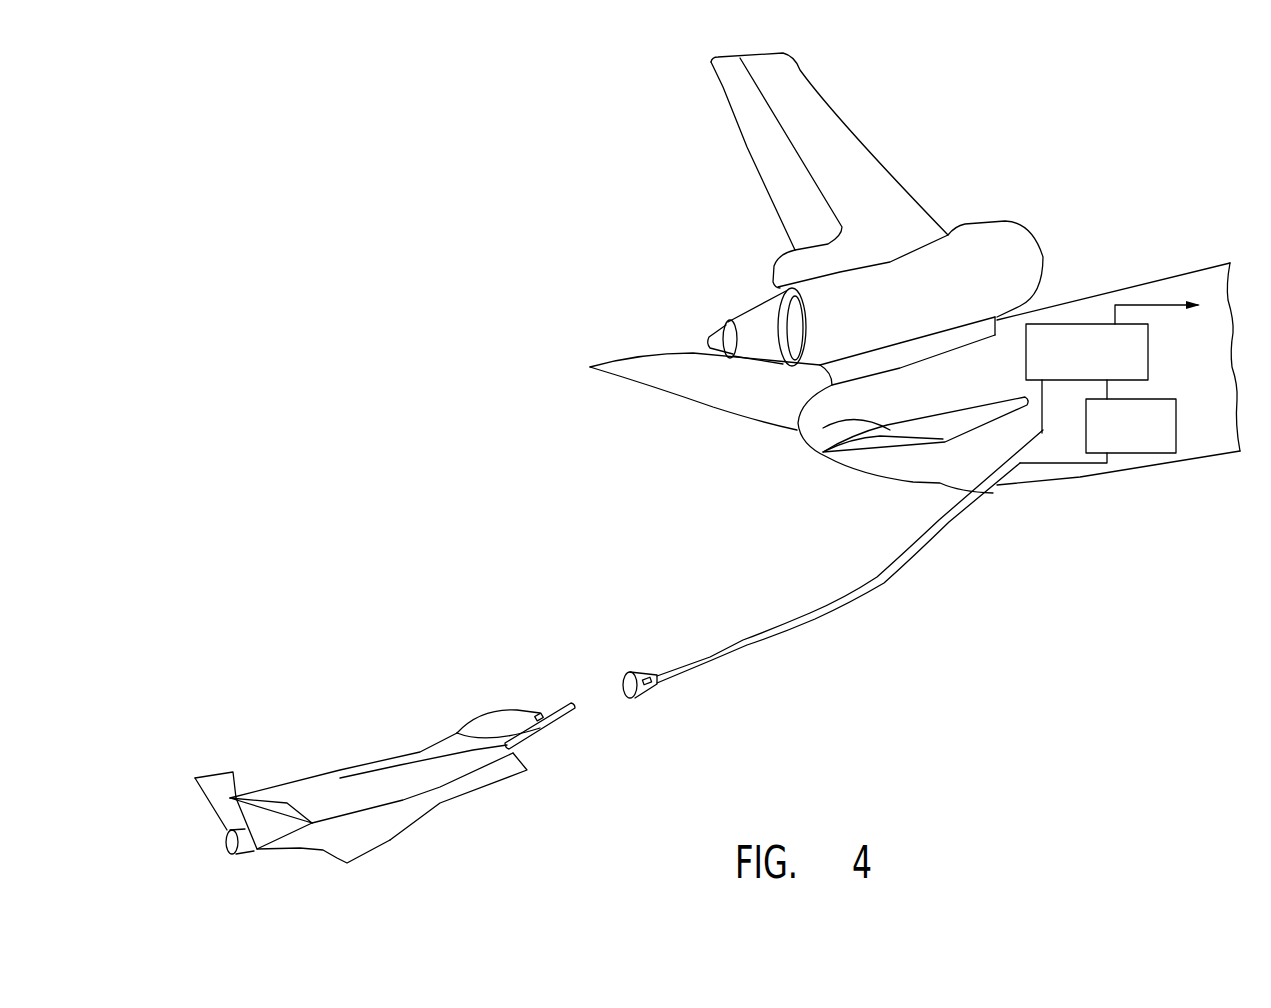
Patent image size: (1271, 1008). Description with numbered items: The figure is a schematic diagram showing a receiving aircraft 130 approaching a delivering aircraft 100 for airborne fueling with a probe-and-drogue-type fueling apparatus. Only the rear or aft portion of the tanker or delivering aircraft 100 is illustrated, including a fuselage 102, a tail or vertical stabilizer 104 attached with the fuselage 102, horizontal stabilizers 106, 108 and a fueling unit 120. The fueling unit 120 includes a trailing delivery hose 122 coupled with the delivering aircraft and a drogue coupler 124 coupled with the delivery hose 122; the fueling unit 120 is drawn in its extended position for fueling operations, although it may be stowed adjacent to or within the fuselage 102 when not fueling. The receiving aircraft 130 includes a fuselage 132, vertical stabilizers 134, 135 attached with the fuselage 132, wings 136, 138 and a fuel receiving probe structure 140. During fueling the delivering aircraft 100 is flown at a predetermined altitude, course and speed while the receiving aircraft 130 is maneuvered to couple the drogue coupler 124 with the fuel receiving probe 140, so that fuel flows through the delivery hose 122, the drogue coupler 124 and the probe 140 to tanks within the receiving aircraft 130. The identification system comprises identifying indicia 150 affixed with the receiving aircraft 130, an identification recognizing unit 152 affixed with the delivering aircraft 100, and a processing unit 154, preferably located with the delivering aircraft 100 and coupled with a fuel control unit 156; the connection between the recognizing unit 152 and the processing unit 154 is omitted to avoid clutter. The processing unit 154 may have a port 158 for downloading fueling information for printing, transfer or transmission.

The delivering aircraft 100 is at (1022, 592).
The fuselage 102 is at (1047, 482).
The vertical stabilizer 104 is at (820, 92).
The horizontal stabilizer 106 is at (677, 397).
The horizontal stabilizer 108 is at (810, 445).
The fueling unit 120 is at (793, 646).
The delivery hose 122 is at (820, 607).
The drogue coupler 124 is at (637, 668).
The receiving aircraft 130 is at (520, 830).
The fuselage 132 is at (517, 782).
The vertical stabilizer 134 is at (233, 770).
The vertical stabilizer 135 is at (263, 797).
The wing 136 is at (340, 770).
The wing 138 is at (387, 843).
The fuel receiving probe structure 140 is at (567, 713).
The identifying indicia 150 is at (537, 712).
The identification recognizing unit 152 is at (648, 686).
The processing unit 154 is at (1070, 324).
The fuel control unit 156 is at (1140, 455).
The port 158 is at (1158, 302).